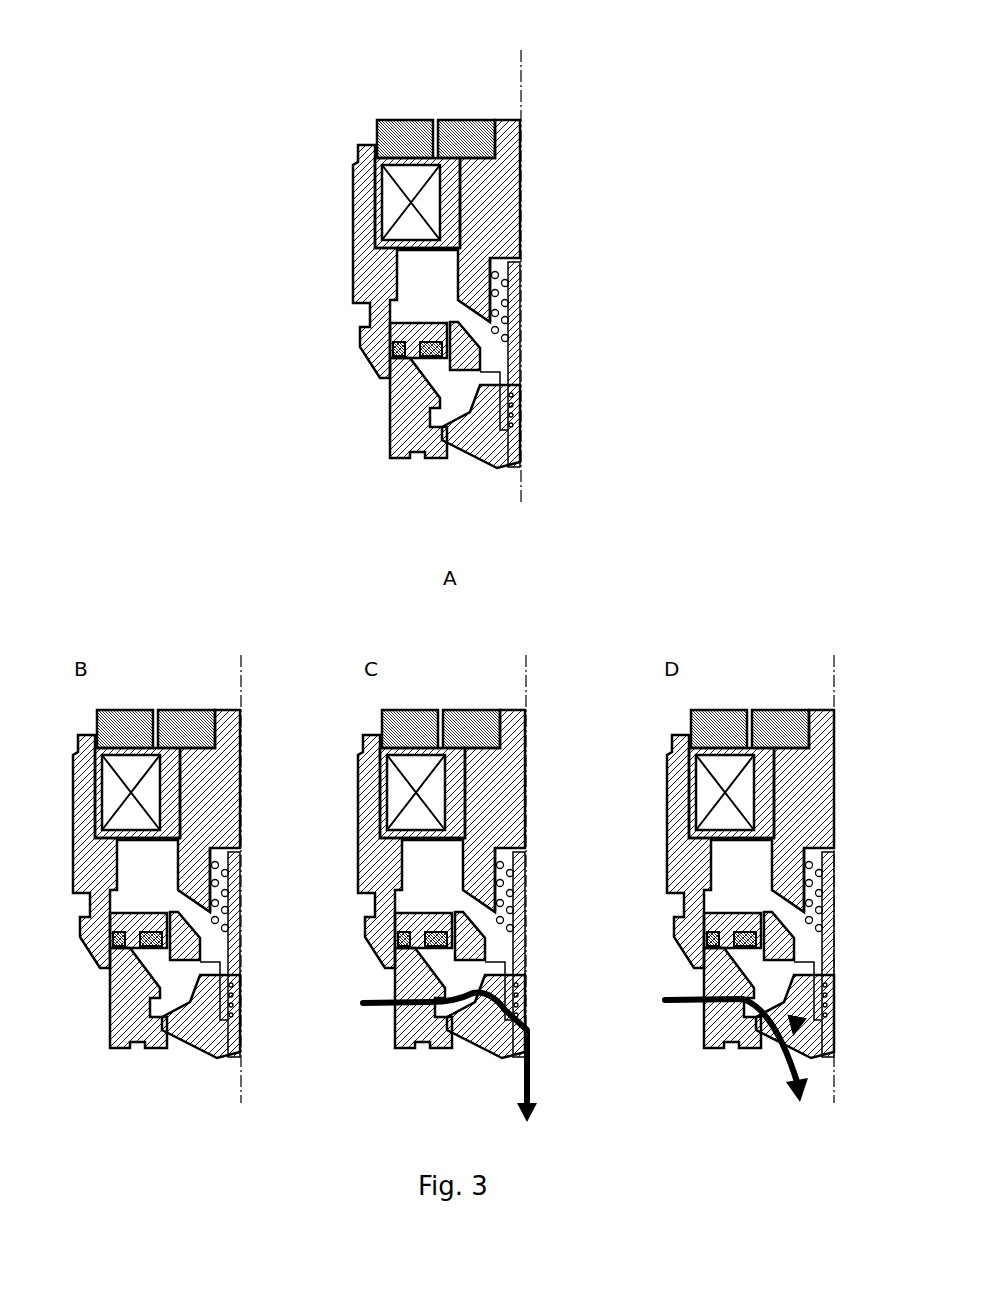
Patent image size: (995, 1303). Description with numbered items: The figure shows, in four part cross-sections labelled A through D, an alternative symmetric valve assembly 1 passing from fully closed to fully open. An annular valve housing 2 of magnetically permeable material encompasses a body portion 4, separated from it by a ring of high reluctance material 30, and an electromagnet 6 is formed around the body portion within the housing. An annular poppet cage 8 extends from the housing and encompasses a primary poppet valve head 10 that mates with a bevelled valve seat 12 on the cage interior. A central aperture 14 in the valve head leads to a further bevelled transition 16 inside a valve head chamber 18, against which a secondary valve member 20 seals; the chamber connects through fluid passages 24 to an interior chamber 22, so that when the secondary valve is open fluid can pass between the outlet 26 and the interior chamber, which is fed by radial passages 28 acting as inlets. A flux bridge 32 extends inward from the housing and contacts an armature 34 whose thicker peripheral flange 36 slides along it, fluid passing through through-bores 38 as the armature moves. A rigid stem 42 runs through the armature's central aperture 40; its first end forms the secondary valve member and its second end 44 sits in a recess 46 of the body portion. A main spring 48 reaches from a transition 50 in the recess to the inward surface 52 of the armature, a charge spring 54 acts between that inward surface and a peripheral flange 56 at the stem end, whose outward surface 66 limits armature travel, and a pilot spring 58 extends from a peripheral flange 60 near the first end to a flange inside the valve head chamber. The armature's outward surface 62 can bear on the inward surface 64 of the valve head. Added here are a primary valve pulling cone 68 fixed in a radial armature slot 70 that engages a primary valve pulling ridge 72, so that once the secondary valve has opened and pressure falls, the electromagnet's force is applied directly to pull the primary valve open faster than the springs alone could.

In FIG. 3A, the valve assembly 1 is at (332, 92).
In FIG. 3A, the valve housing 2 is at (357, 142).
In FIG. 3A, the body portion 4 is at (487, 175).
In FIG. 3A, the electromagnet 6 is at (383, 184).
In FIG. 3A, the annular poppet cage 8 is at (384, 456).
In FIG. 3A, the primary poppet valve head 10 is at (458, 445).
In FIG. 3A, the valve seat 12 is at (470, 378).
In FIG. 3A, the aperture 14 is at (523, 458).
In FIG. 3A, the bevelled transition 16 is at (513, 462).
In FIG. 3A, the valve head chamber 18 is at (515, 438).
In FIG. 3A, the secondary valve member 20 is at (486, 452).
In FIG. 3A, the interior chamber 22 is at (392, 370).
In FIG. 3A, the fluid passages 24 is at (438, 437).
In FIG. 3A, the outlet 26 is at (458, 468).
In FIG. 3A, the radial passages 28 is at (460, 352).
In FIG. 3A, the ring of high reluctance material 30 is at (397, 280).
In FIG. 3A, the flux bridge 32 is at (386, 335).
In FIG. 3A, the armature 34 is at (518, 363).
In FIG. 3A, the peripheral flange 36 is at (376, 325).
In FIG. 3A, the through-bores 38 is at (395, 346).
In FIG. 3A, the central aperture 40 is at (516, 368).
In FIG. 3A, the rigid stem 42 is at (522, 375).
In FIG. 3A, the second end 44 is at (512, 302).
In FIG. 3A, the recess 46 is at (400, 273).
In FIG. 3A, the main spring 48 is at (504, 268).
In FIG. 3A, the transition 50 is at (497, 258).
In FIG. 3A, the inward surface 52 is at (515, 358).
In FIG. 3A, the charge spring 54 is at (513, 328).
In FIG. 3A, the peripheral flange 56 is at (522, 282).
In FIG. 3A, the pilot spring 58 is at (517, 398).
In FIG. 3A, the peripheral flange 60 is at (517, 428).
In FIG. 3A, the outward surface 62 is at (470, 382).
In FIG. 3D, the outward surface 62 is at (803, 1039).
In FIG. 3A, the inward surface 64 is at (468, 402).
In FIG. 3A, the outward surface 66 is at (507, 352).
In FIG. 3A, the primary valve pulling cone 68 is at (468, 388).
In FIG. 3A, the radial armature slot 70 is at (518, 372).
In FIG. 3A, the primary valve pulling ridge 72 is at (517, 392).